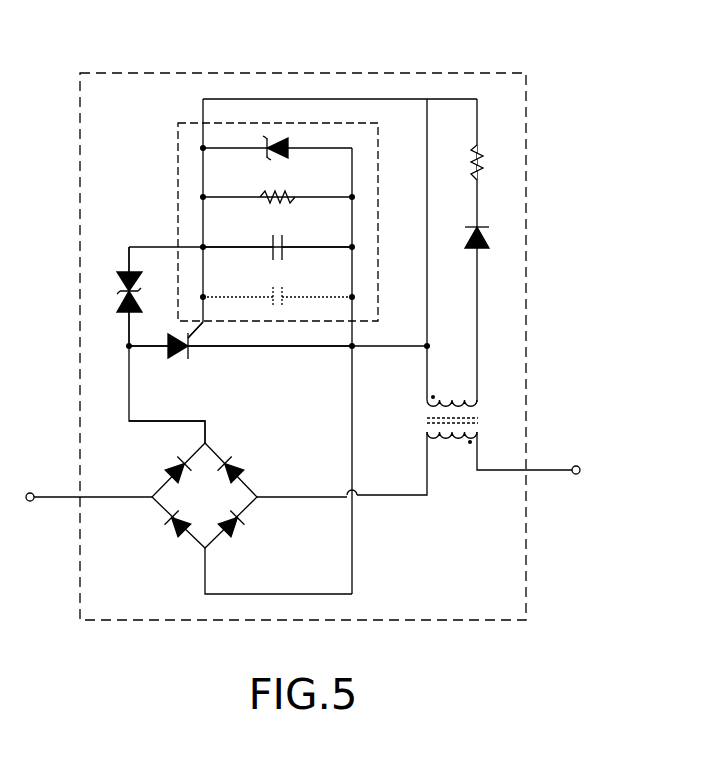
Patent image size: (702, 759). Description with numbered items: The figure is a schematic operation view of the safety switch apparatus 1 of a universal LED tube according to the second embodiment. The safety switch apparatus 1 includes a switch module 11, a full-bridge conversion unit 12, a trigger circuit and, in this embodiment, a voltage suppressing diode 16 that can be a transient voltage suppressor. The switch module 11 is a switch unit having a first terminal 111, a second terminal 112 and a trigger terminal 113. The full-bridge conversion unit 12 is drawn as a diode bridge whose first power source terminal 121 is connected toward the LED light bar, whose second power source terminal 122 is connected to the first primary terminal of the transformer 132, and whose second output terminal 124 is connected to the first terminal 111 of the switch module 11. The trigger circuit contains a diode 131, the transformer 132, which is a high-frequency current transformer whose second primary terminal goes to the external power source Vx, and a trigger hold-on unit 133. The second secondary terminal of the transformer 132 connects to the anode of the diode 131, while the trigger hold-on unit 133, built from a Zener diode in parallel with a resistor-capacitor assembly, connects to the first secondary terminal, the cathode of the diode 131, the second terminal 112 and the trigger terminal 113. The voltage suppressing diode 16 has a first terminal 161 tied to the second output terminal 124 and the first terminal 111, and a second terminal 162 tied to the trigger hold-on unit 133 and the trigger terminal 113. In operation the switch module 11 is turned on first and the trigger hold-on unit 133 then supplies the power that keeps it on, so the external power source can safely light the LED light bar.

The safety switch apparatus 1 is at (309, 37).
The switch module 11 is at (185, 358).
The first terminal 111 is at (164, 352).
The second terminal 112 is at (197, 350).
The trigger terminal 113 is at (196, 332).
The full-bridge conversion unit 12 is at (243, 462).
The first power source terminal 121 is at (138, 495).
The second power source terminal 122 is at (270, 493).
The second output terminal 124 is at (207, 433).
The diode 131 is at (490, 235).
The transformer 132 is at (478, 421).
The trigger hold-on unit 133 is at (185, 140).
The voltage suppressing diode 16 is at (120, 285).
The first terminal 161 is at (128, 322).
The second terminal 162 is at (128, 262).